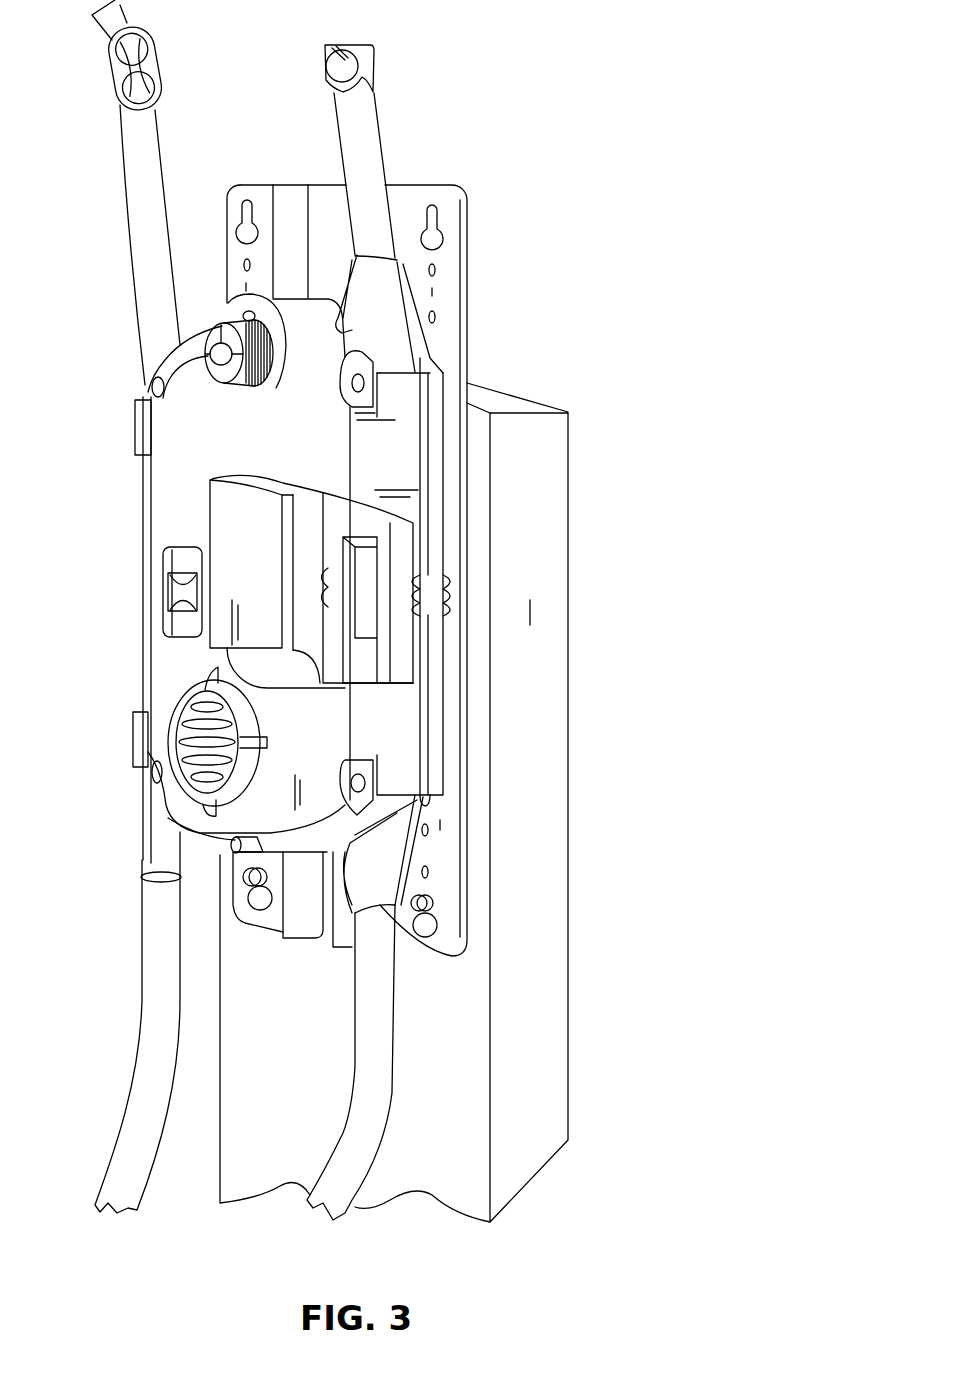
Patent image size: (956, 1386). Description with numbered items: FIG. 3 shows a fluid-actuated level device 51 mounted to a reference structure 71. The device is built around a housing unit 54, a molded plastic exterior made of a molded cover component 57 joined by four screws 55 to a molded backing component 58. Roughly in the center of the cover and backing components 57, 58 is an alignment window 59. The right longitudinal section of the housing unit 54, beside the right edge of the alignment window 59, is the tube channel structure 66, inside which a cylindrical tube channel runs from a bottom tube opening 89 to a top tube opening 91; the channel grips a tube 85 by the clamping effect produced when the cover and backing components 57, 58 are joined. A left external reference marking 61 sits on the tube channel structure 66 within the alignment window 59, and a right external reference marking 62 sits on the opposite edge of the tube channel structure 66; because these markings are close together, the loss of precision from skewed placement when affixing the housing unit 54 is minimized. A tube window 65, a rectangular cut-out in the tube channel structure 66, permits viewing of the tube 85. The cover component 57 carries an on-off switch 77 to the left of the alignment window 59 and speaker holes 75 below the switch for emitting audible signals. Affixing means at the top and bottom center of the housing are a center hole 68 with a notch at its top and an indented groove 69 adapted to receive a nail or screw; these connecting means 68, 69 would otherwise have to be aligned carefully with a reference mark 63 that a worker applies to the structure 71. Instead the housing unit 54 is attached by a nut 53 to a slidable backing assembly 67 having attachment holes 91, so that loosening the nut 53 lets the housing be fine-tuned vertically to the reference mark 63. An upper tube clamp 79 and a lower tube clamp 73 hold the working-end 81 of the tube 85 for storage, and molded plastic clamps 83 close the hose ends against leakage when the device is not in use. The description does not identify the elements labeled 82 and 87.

The fluid-actuated level device 51 is at (552, 168).
The nut 53 is at (273, 372).
The housing unit 54 is at (310, 420).
The screws 55 is at (155, 386).
The molded cover component 57 is at (420, 350).
The molded backing component 58 is at (432, 390).
The alignment window 59 is at (303, 535).
The left external reference marking 61 is at (318, 586).
The right external reference marking 62 is at (450, 588).
The reference mark 63 is at (527, 614).
The tube window 65 is at (363, 604).
The tube channel structure 66 is at (402, 643).
The slidable backing assembly 67 is at (440, 820).
The center hole 68 is at (242, 319).
The indented groove 69 is at (230, 845).
The reference structure 71 is at (528, 1042).
The lower tube clamp 73 is at (133, 747).
The speaker holes 75 is at (185, 732).
The on-off switch 77 is at (168, 586).
The upper tube clamp 79 is at (137, 438).
The working-end of tube 81 is at (142, 176).
The right tube 82 is at (378, 120).
The molded plastic clamps 83 is at (112, 65).
The tube 85 is at (140, 1098).
The mounting plate 87 is at (390, 253).
The bottom tube opening 89 is at (398, 952).
The attachment holes 91 is at (432, 236).